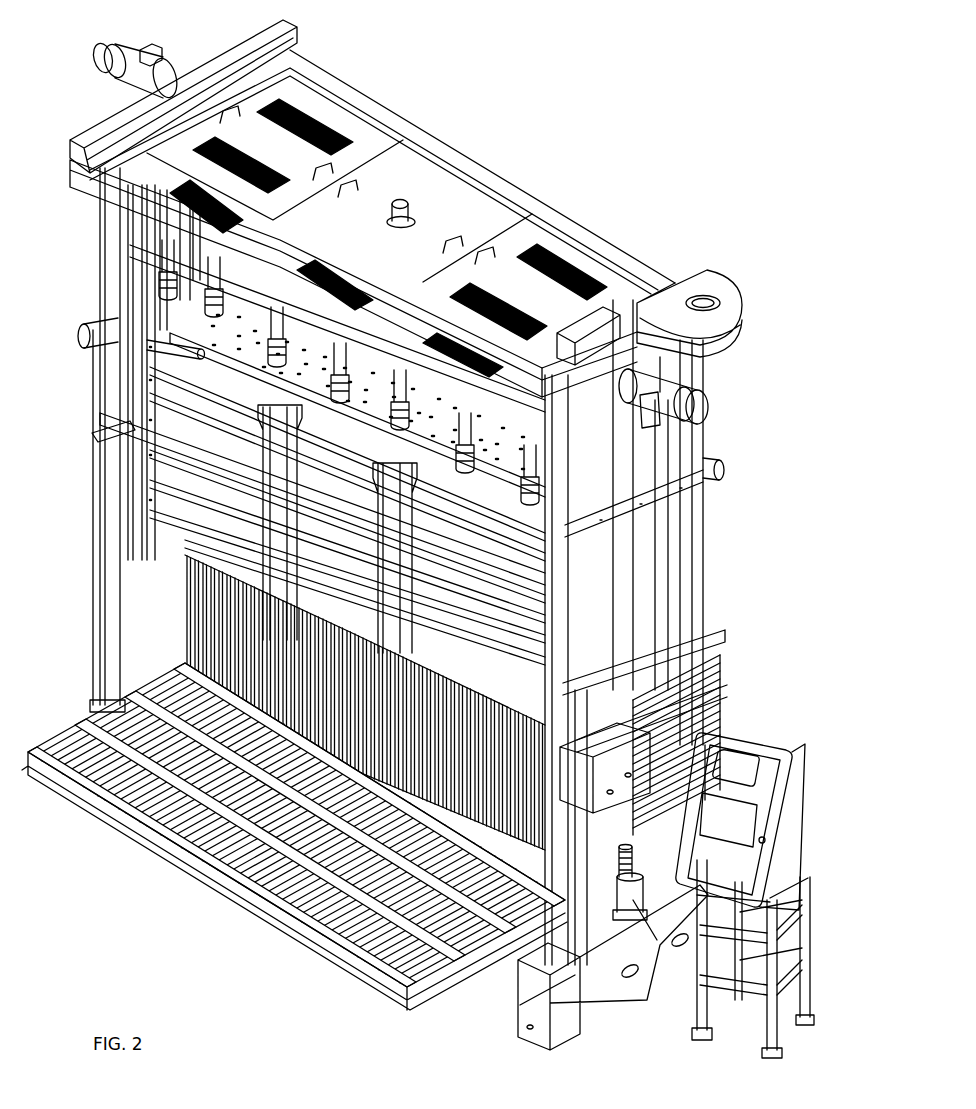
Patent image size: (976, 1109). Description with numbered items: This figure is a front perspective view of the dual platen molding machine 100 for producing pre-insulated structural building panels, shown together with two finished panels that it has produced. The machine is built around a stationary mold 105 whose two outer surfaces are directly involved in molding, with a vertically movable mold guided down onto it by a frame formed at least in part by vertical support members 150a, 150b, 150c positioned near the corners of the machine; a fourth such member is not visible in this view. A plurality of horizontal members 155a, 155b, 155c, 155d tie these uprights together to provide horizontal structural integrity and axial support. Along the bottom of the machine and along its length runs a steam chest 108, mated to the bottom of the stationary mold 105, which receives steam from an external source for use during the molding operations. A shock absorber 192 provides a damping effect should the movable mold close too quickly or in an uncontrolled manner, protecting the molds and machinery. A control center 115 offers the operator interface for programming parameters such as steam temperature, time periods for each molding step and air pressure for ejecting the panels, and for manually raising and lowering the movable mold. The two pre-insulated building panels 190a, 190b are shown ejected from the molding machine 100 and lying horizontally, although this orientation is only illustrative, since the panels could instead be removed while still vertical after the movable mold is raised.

The dual platen molding machine 100 is at (646, 191).
The stationary mold 105 is at (195, 611).
The steam chest 108 is at (606, 985).
The control center 115 is at (797, 790).
The vertical support member 150a is at (100, 476).
The vertical support member 150b is at (560, 578).
The vertical support member 150c is at (703, 501).
The horizontal member 155a is at (287, 36).
The horizontal member 155b is at (648, 338).
The horizontal member 155c is at (703, 620).
The horizontal member 155d is at (103, 414).
The pre-insulated building panel 190a is at (213, 883).
The pre-insulated building panel 190b is at (753, 731).
The shock absorber 192 is at (660, 955).